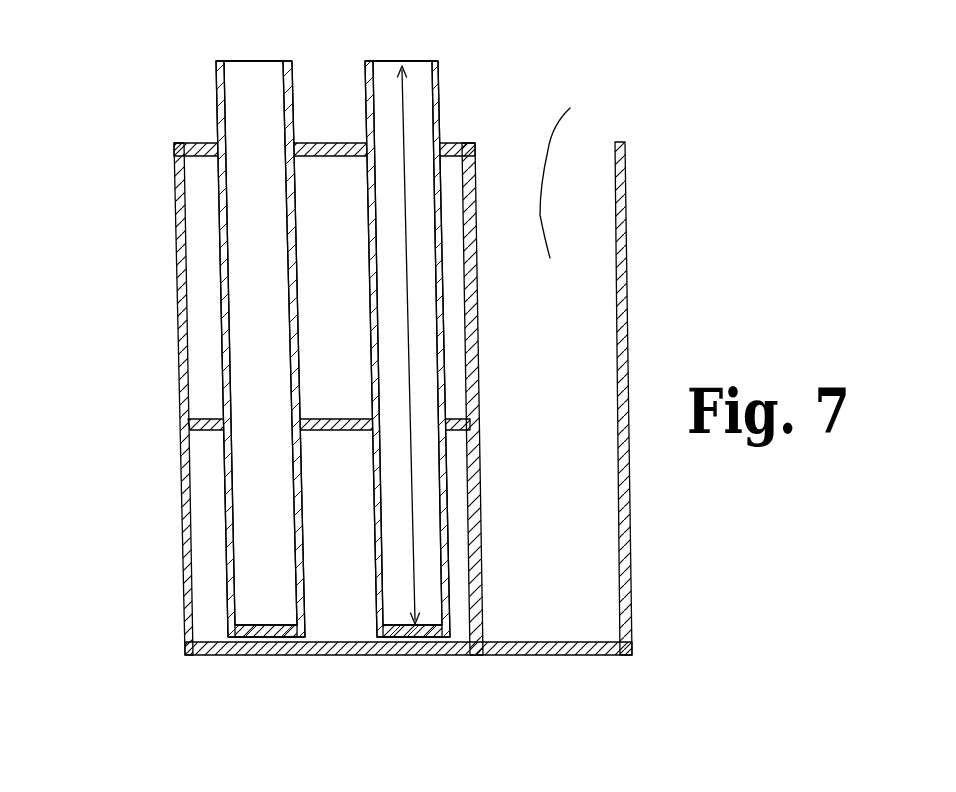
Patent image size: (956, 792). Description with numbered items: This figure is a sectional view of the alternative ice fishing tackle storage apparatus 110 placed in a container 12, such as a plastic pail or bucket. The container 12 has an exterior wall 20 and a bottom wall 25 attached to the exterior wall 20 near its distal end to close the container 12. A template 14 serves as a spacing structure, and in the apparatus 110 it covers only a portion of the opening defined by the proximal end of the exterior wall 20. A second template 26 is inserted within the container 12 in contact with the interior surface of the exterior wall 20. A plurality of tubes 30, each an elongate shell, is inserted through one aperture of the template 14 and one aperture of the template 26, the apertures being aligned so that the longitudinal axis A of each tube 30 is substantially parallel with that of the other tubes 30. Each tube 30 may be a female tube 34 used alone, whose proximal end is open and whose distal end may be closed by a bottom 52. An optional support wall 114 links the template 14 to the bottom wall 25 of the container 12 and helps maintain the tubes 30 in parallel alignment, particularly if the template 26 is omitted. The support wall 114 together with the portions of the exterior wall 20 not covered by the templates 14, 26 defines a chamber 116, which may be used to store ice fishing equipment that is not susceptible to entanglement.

The ice fishing tackle storage apparatus 110 is at (723, 83).
The container 12 is at (175, 248).
The template 14 is at (190, 143).
The exterior wall 20 is at (625, 213).
The bottom wall 25 is at (470, 655).
The template 26 is at (203, 422).
The tube 30 is at (292, 97).
The female tube 34 is at (287, 145).
The bottom 52 is at (274, 612).
The support wall 114 is at (476, 170).
The chamber 116 is at (579, 172).